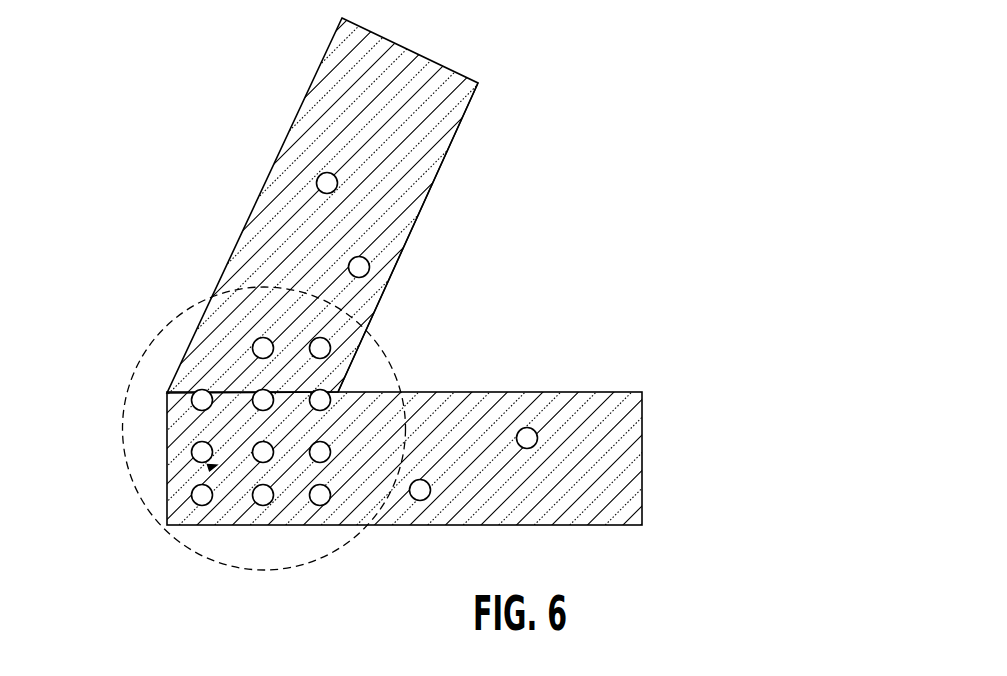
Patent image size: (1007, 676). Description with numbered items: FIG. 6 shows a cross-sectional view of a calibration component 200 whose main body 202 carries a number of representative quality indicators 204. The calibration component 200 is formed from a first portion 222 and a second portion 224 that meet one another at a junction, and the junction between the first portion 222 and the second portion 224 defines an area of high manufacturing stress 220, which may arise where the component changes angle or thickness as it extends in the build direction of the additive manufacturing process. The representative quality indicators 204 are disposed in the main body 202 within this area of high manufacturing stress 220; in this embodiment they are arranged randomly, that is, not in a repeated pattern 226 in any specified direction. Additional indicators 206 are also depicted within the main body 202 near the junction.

The calibration component 200 is at (503, 338).
The main body 202 is at (380, 283).
The representative quality indicators 204 is at (316, 183).
The holes in joint region 206 is at (325, 503).
The area of high manufacturing stress 220 is at (164, 328).
The first portion 222 is at (408, 204).
The second portion 224 is at (471, 397).
The pattern 226 is at (212, 467).